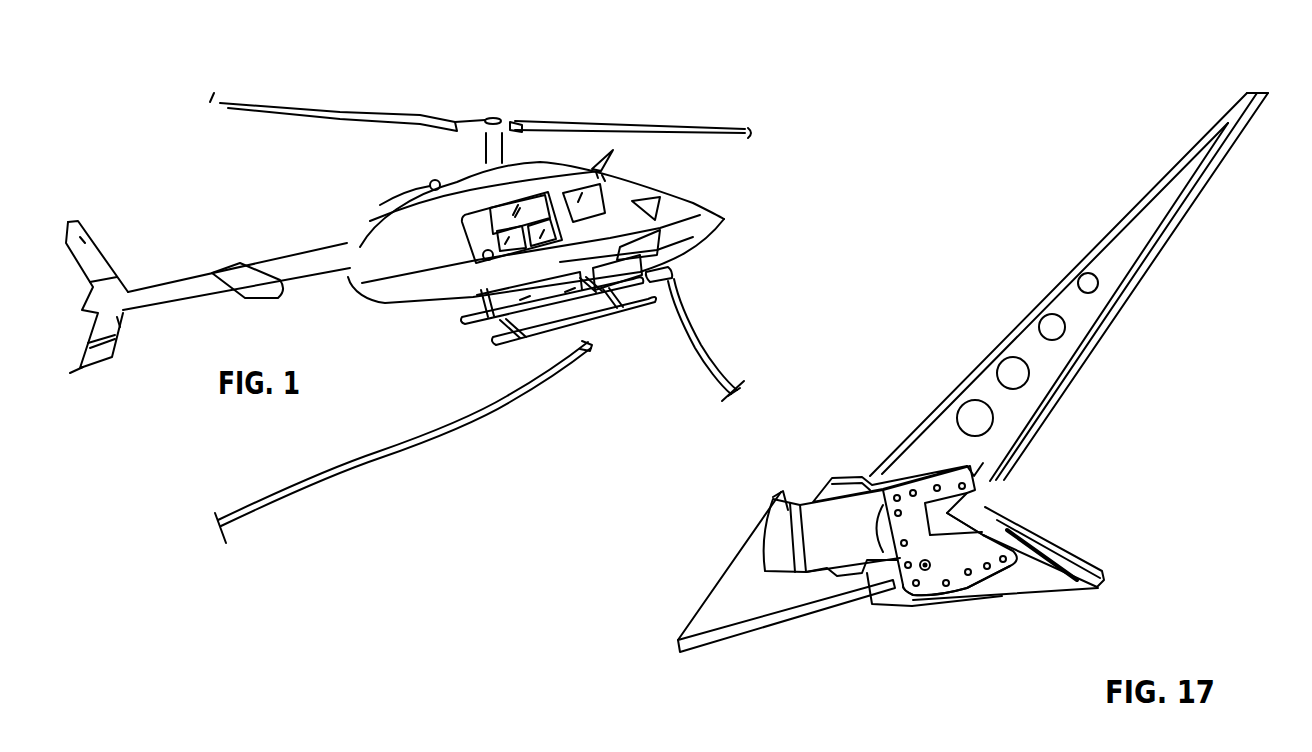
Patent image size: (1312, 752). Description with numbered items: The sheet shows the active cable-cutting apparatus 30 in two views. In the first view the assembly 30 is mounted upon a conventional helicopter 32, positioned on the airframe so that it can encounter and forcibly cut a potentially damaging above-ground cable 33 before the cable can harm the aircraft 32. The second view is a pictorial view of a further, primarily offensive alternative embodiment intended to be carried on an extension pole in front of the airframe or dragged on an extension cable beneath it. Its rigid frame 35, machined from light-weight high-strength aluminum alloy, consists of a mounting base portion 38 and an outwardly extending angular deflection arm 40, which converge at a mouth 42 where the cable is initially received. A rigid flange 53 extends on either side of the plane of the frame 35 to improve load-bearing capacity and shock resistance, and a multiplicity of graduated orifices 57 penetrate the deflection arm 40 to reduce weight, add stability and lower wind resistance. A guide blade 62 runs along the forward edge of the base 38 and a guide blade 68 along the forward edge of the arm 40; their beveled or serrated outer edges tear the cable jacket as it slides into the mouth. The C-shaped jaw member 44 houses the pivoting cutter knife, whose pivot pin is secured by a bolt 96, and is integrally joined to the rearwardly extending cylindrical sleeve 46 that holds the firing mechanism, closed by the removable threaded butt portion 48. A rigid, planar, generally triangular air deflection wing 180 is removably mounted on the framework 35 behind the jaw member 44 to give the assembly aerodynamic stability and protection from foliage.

In FIG. 1, the active cable-cutting apparatus 30 is at (606, 166).
In FIG. 17, the active cable-cutting apparatus 30 is at (986, 311).
In FIG. 1, the helicopter 32 is at (362, 165).
In FIG. 1, the above-ground cable 33 is at (712, 366).
In FIG. 17, the frame 35 is at (952, 359).
In FIG. 17, the mounting base portion 38 is at (1018, 573).
In FIG. 17, the deflection arm 40 is at (898, 469).
In FIG. 17, the mouth 42 is at (987, 500).
In FIG. 17, the jaw member 44 is at (956, 570).
In FIG. 17, the cylindrical sleeve 46 is at (856, 548).
In FIG. 17, the butt portion 48 is at (783, 531).
In FIG. 17, the flange 53 is at (1095, 253).
In FIG. 17, the orifices 57 is at (1017, 375).
In FIG. 17, the guide blade 62 is at (1077, 553).
In FIG. 17, the guide blade 68 is at (1152, 259).
In FIG. 17, the bolt 96 is at (925, 571).
In FIG. 17, the air deflection wing 180 is at (786, 572).